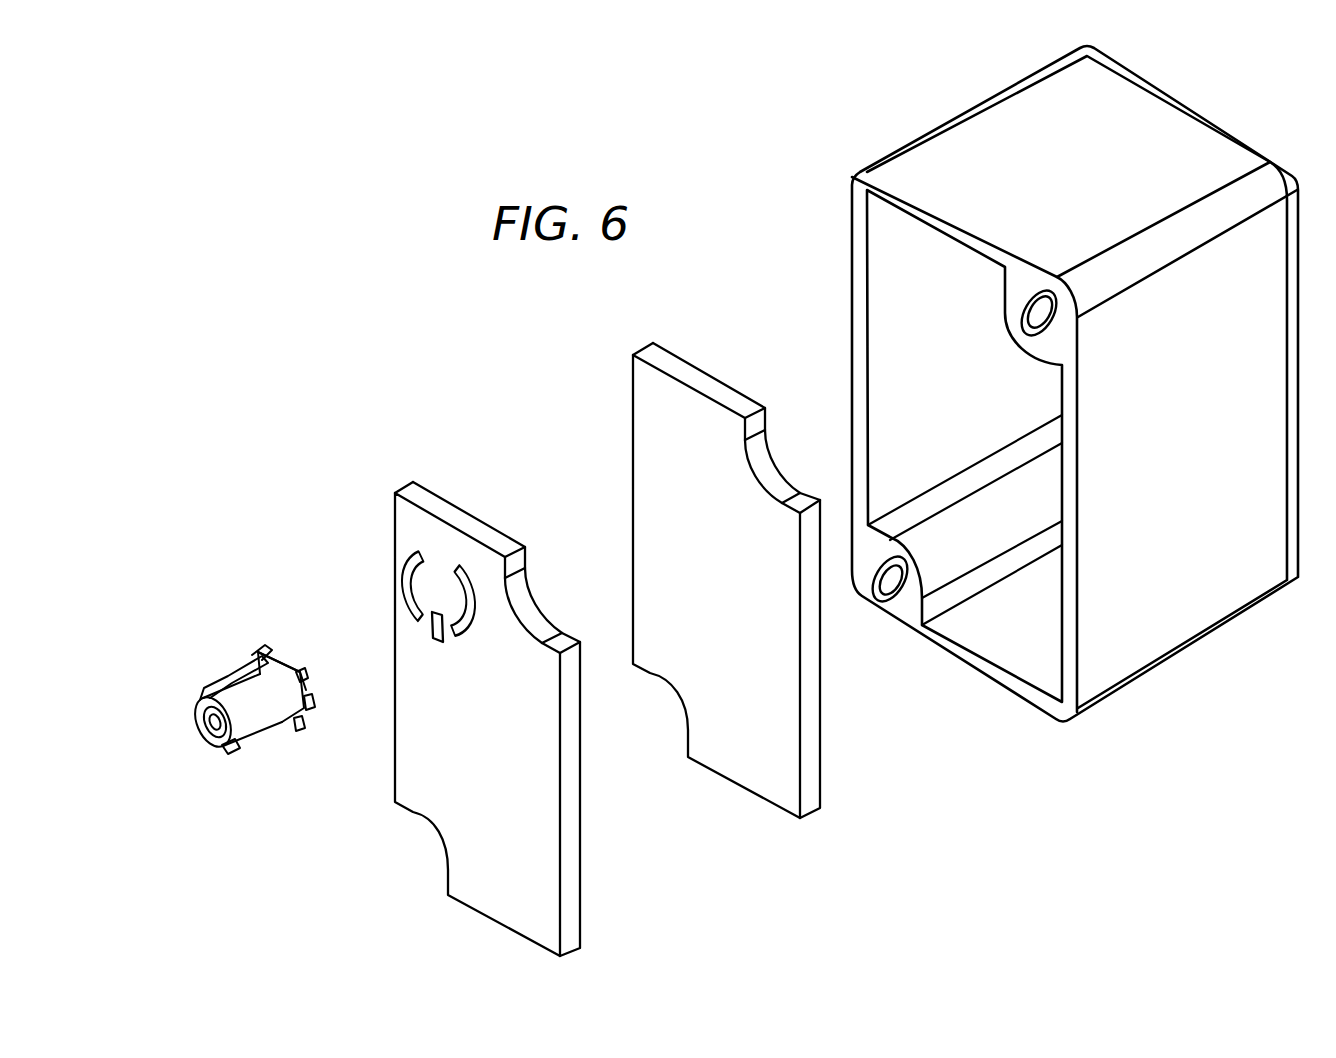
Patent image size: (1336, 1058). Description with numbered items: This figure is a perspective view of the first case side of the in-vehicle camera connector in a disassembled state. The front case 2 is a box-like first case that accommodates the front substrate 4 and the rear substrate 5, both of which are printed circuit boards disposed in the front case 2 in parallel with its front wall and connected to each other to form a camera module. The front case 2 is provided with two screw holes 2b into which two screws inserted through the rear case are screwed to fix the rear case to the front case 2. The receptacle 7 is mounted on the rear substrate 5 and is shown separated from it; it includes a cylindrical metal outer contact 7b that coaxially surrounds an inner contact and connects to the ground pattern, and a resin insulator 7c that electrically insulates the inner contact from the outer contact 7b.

The front case 2 is at (1177, 127).
The screw holes 2b is at (1037, 310).
The front substrate 4 is at (645, 437).
The rear substrate 5 is at (410, 528).
The receptacle 7 is at (238, 686).
The outer contact 7b is at (203, 687).
The insulator 7c is at (223, 743).